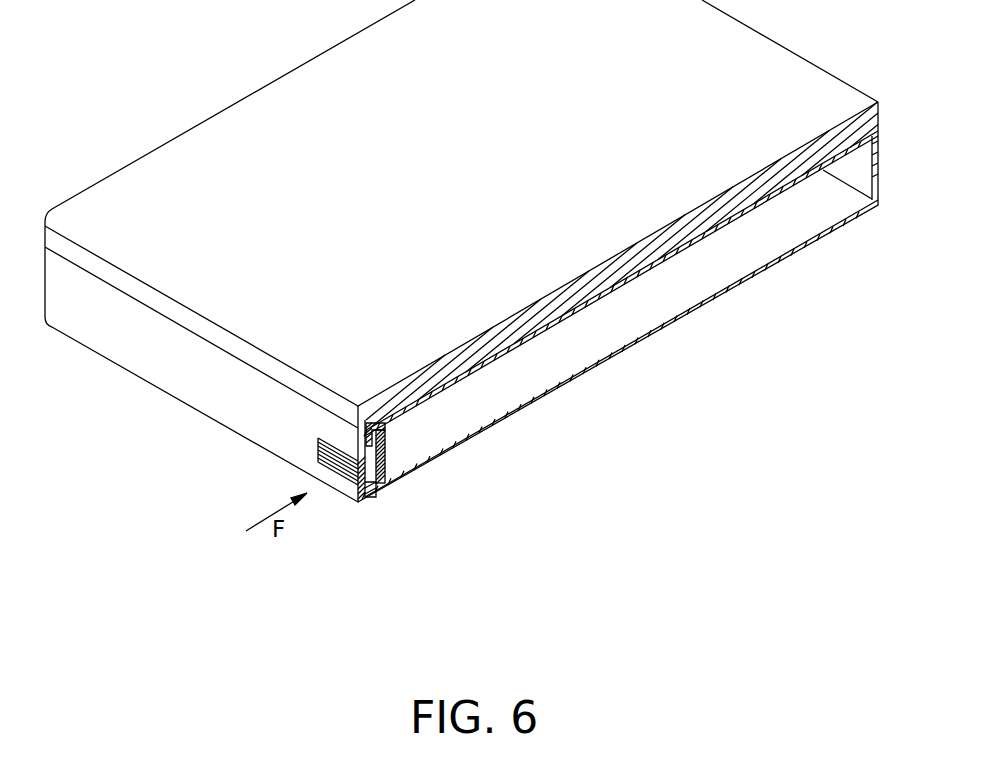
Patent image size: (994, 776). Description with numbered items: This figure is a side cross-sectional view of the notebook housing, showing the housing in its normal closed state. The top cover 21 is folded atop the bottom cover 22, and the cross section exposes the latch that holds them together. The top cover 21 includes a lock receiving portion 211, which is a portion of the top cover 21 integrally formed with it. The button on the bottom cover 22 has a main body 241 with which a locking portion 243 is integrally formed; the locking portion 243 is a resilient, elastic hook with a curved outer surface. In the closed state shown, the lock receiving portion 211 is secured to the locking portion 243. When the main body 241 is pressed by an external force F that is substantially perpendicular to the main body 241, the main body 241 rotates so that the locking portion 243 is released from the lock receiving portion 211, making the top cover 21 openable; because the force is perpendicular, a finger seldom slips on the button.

The top cover 21 is at (297, 382).
The bottom cover 22 is at (178, 372).
The lock receiving portion 211 is at (386, 445).
The main body 241 is at (374, 487).
The locking portion 243 is at (386, 433).